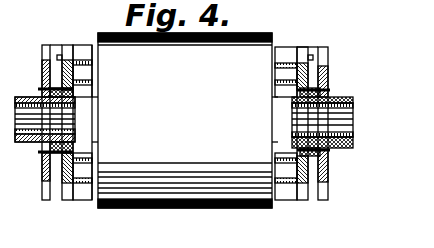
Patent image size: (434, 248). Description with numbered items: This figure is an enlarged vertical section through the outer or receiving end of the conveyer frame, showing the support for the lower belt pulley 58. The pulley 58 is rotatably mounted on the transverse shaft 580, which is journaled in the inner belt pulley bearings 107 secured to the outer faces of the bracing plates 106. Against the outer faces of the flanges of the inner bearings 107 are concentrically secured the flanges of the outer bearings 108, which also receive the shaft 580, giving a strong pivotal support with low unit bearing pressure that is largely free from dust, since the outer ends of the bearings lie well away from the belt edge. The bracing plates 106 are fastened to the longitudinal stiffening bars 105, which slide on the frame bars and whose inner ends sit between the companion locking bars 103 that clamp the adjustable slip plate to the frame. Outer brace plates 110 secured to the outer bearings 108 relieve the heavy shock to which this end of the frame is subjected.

The belt pulley 58 is at (185, 120).
The locking bar 103 is at (272, 206).
The stiffening bar 105 is at (285, 63).
The bracing plate 106 is at (68, 45).
The inner belt pulley bearing 107 is at (96, 112).
The outer bearing 108 is at (25, 143).
The outer brace plate 110 is at (50, 200).
The shaft 580 is at (354, 122).